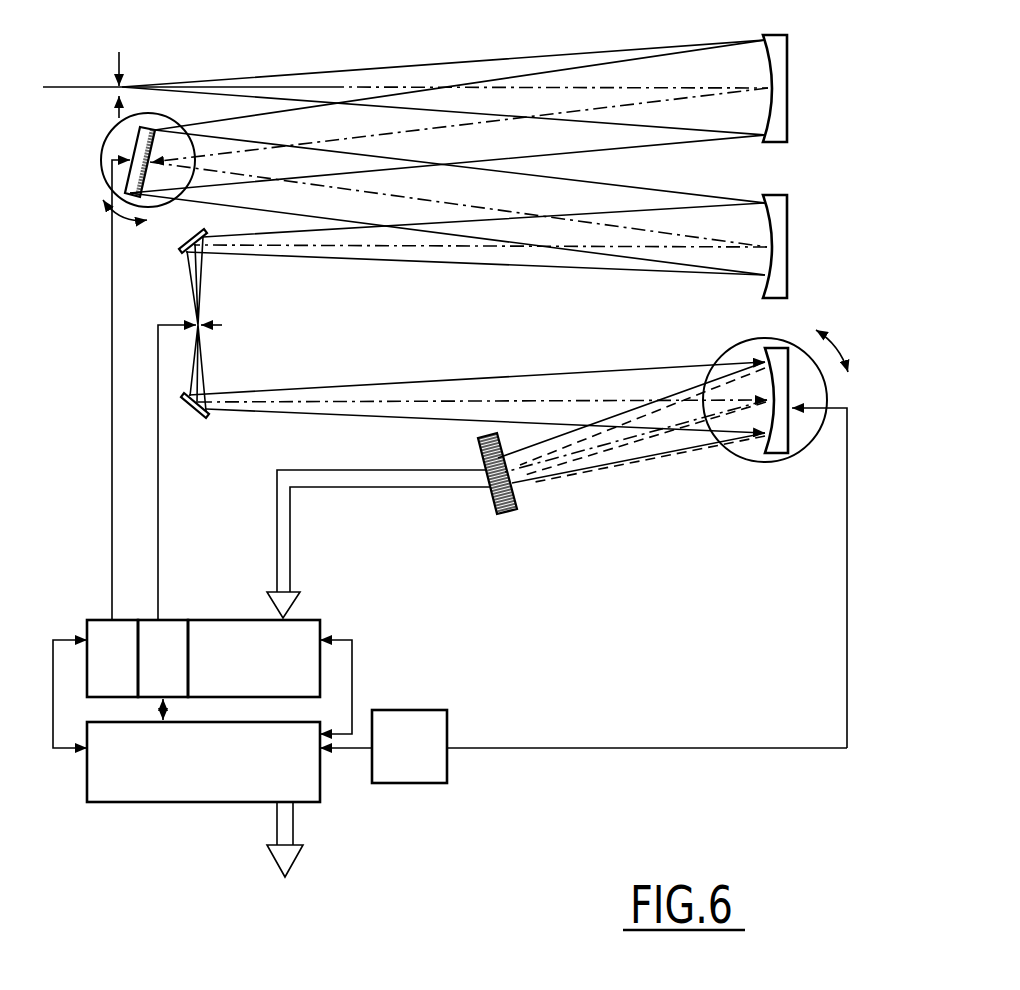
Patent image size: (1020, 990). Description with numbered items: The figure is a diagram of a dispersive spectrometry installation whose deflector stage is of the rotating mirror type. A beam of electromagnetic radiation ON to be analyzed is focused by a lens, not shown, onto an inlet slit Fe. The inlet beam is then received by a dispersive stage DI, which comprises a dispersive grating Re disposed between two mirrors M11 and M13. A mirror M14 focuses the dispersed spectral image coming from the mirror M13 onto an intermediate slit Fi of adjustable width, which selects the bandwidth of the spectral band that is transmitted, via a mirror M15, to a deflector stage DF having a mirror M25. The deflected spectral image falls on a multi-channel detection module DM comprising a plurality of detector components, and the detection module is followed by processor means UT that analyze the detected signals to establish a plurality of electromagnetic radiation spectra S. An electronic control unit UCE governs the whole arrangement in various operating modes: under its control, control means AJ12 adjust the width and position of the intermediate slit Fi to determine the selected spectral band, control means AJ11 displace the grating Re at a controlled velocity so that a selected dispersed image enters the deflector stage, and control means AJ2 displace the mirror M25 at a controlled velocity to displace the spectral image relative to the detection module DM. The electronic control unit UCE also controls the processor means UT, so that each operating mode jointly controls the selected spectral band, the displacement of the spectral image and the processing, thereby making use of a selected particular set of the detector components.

The beam of electromagnetic radiation ON is at (66, 87).
The inlet slit Fe is at (131, 40).
The dispersive stage DI is at (103, 163).
The dispersive grating Re is at (112, 232).
The mirror M11 is at (789, 68).
The mirror M13 is at (789, 228).
The mirror M14 is at (186, 255).
The intermediate slit Fi is at (212, 325).
The mirror M15 is at (204, 418).
The mirror M25 is at (790, 385).
The deflector stage DF is at (778, 462).
The multi-channel detection module DM is at (519, 512).
The control means AJ11 is at (112, 658).
The control means AJ12 is at (163, 658).
The processor means UT is at (254, 658).
The electronic control unit UCE is at (203, 762).
The control means AJ2 is at (409, 746).
The electromagnetic radiation spectra S is at (287, 853).